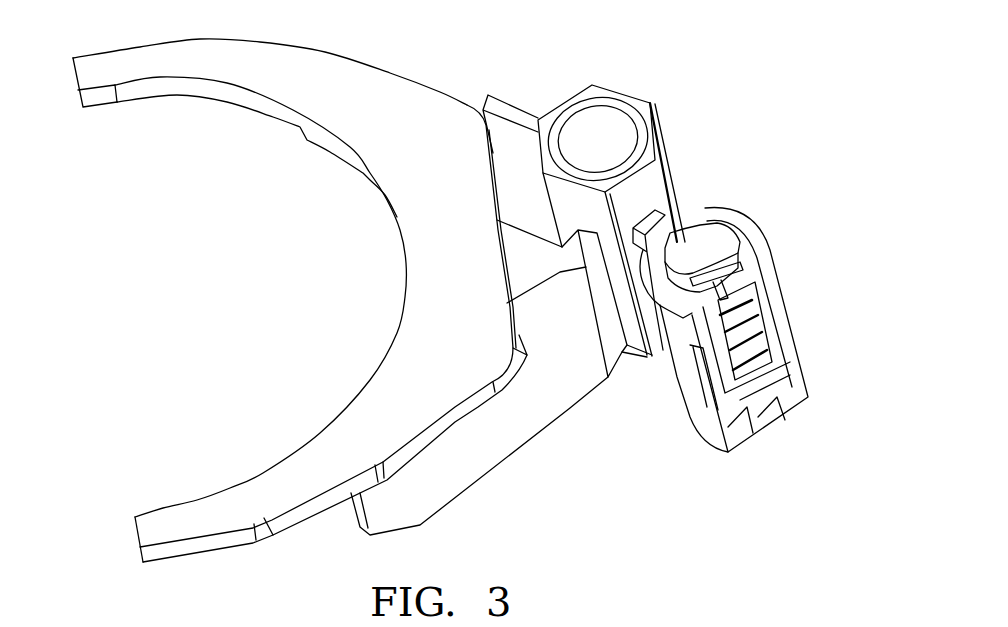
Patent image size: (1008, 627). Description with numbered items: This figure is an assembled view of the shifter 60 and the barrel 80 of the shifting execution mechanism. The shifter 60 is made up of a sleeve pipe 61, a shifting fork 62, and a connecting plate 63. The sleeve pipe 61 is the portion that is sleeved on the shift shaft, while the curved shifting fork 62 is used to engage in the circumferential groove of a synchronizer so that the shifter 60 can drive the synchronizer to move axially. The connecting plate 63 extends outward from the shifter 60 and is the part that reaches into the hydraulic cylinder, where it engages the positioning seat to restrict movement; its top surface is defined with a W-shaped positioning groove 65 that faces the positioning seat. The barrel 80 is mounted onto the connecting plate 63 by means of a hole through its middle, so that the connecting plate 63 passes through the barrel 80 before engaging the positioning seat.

The shifter 60 is at (640, 82).
The sleeve pipe 61 is at (662, 150).
The shifting fork 62 is at (173, 63).
The connecting plate 63 is at (668, 230).
The W-shaped positioning groove 65 is at (750, 350).
The barrel 80 is at (693, 403).